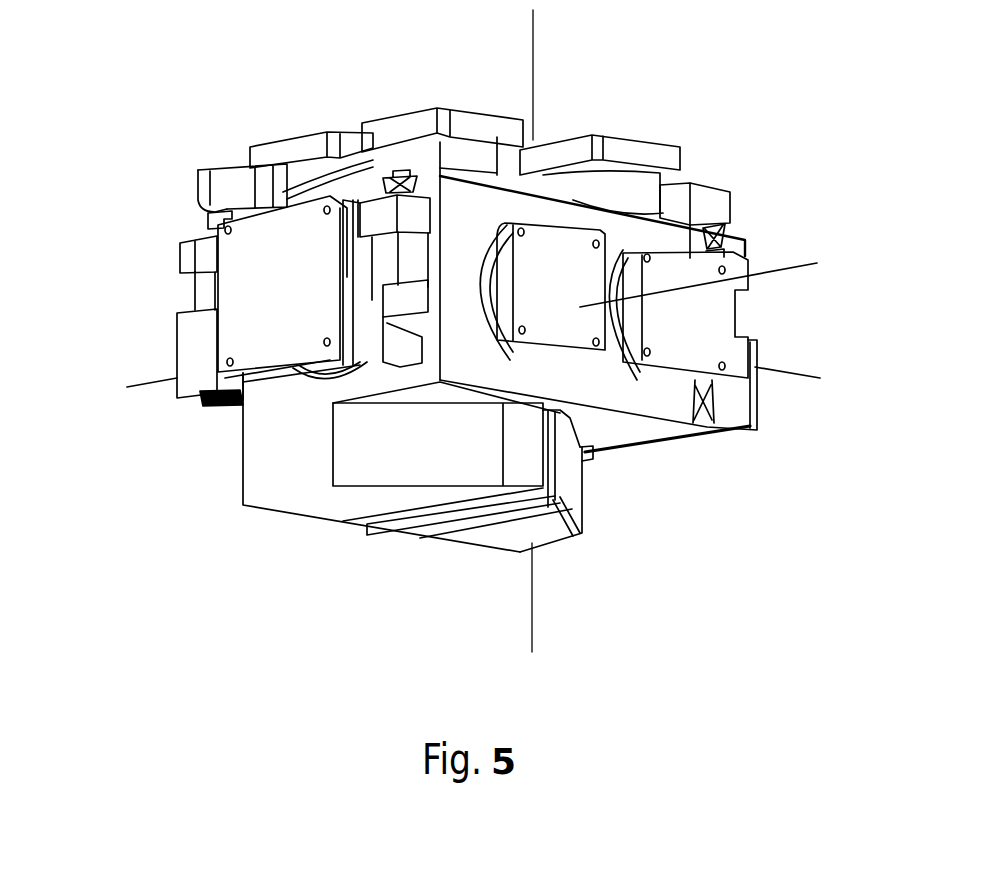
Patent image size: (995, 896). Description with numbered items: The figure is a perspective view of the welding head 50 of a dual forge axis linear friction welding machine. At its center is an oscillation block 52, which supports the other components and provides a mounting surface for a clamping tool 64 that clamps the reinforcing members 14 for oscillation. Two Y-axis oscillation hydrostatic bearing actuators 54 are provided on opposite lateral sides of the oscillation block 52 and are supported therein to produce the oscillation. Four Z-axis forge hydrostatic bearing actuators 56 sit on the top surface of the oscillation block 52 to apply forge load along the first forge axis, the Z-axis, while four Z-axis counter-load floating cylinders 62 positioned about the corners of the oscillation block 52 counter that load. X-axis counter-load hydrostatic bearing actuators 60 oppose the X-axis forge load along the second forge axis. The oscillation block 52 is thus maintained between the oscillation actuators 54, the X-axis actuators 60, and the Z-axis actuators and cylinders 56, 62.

The reinforcing member 14 is at (563, 508).
The welding head 50 is at (750, 104).
The oscillation block 52 is at (270, 467).
The Y-axis oscillation hydrostatic bearing actuator 54 is at (243, 308).
The Z-axis forge hydrostatic bearing actuator 56 is at (300, 147).
The X-axis counter-load hydrostatic bearing actuator 60 is at (580, 253).
The Z-axis counter-load floating cylinder 62 is at (277, 280).
The clamping tool 64 is at (560, 468).